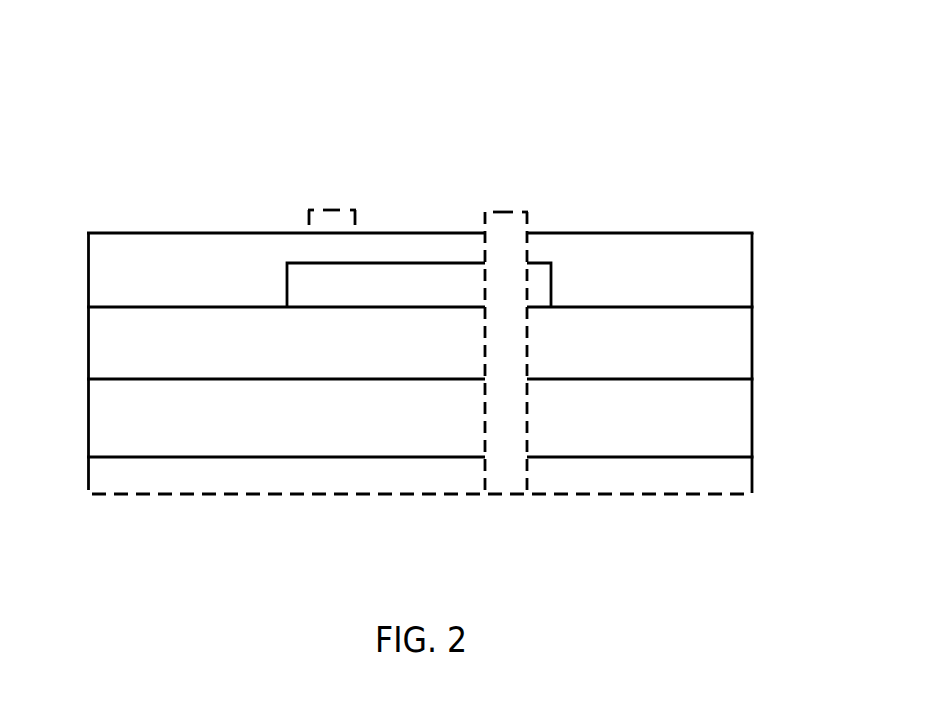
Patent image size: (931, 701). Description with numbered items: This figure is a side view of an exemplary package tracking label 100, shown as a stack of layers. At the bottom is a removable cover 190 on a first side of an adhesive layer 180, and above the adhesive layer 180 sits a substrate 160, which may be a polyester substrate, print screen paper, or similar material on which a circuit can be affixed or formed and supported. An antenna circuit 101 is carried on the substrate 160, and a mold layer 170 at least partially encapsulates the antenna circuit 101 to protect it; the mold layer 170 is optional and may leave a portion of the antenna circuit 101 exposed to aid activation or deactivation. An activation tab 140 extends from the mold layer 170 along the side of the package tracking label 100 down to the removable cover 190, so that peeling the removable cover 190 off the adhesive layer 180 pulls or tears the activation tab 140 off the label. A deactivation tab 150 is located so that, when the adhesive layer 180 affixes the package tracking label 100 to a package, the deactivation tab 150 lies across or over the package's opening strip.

The package tracking label 100 is at (425, 254).
The antenna circuit 101 is at (287, 288).
The activation tab 140 is at (500, 210).
The deactivation tab 150 is at (327, 209).
The substrate 160 is at (88, 344).
The mold layer 170 is at (752, 268).
The adhesive layer 180 is at (88, 411).
The removable cover 190 is at (88, 481).